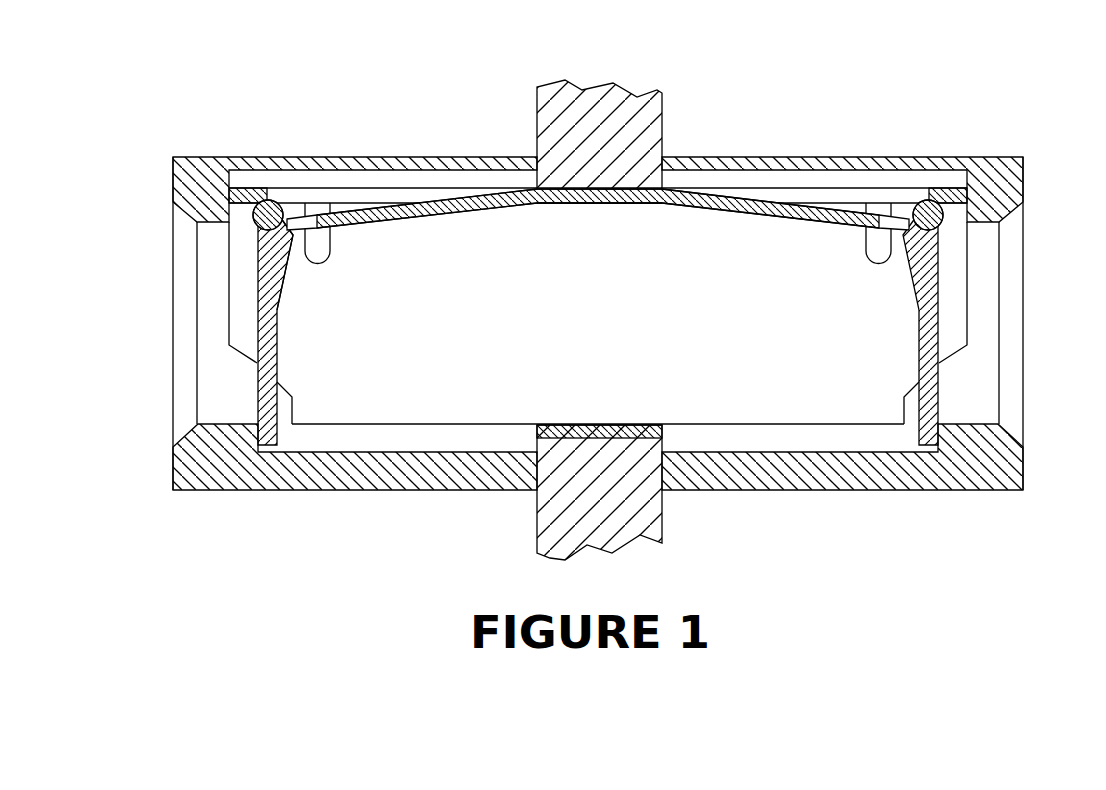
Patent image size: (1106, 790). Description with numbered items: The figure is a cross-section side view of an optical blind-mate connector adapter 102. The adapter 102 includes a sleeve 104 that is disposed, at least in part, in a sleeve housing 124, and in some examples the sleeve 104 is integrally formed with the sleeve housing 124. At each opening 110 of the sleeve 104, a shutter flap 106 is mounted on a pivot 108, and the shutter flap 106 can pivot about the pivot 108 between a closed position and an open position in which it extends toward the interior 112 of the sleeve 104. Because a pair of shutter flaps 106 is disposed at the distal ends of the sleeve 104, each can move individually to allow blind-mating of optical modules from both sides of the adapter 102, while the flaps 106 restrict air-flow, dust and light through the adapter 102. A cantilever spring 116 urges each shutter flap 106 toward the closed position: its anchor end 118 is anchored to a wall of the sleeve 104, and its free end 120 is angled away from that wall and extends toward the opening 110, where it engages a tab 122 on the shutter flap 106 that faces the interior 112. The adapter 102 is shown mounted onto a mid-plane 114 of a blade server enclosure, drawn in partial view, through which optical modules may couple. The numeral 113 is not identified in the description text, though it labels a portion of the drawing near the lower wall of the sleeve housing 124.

The optical blind-mate connector adapter 102 is at (247, 122).
The sleeve 104 is at (832, 193).
The shutter flap 106 is at (279, 343).
The pivot 108 is at (253, 224).
The opening 110 is at (185, 322).
The interior 112 is at (617, 337).
The bottom wall notch 113 is at (258, 445).
The mid-plane 114 is at (664, 110).
The cantilever spring 116 is at (437, 218).
The anchor end 118 is at (537, 204).
The free end 120 is at (328, 243).
The tab 122 is at (290, 282).
The sleeve housing 124 is at (943, 157).